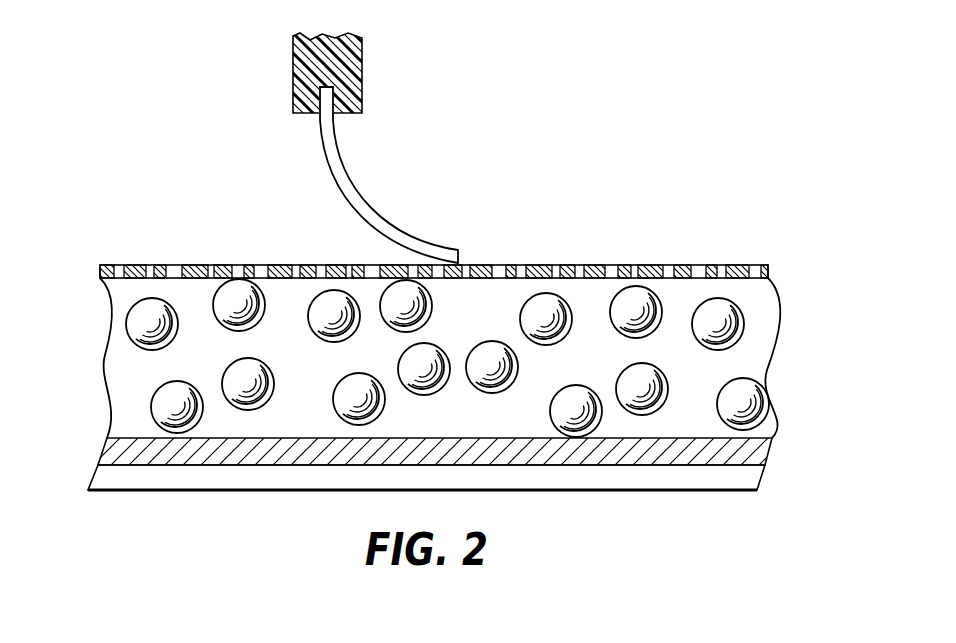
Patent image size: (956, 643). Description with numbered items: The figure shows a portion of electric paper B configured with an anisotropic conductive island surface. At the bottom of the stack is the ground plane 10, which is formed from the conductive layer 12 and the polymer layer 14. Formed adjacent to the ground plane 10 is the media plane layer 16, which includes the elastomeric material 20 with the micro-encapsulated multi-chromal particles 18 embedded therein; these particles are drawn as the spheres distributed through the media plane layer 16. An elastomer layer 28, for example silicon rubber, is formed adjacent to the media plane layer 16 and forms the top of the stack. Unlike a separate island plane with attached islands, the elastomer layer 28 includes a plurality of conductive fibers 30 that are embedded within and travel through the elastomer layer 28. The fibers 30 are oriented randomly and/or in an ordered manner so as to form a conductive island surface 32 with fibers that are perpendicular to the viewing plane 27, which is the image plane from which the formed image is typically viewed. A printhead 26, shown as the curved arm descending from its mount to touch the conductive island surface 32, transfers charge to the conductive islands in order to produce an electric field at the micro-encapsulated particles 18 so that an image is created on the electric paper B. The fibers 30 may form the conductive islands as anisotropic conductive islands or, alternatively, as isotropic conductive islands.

The ground plane 10 is at (445, 450).
The conductive layer 12 is at (108, 455).
The polymer layer 14 is at (100, 482).
The media plane layer 16 is at (790, 281).
The micro-encapsulated multi-chromal particles 18 is at (142, 323).
The elastomeric material 20 is at (108, 345).
The printhead 26 is at (342, 195).
The viewing plane 27 is at (469, 228).
The elastomer layer 28 is at (790, 265).
The conductive fibers 30 is at (273, 265).
The conductive island surface 32 is at (288, 259).
The electric paper B is at (629, 111).